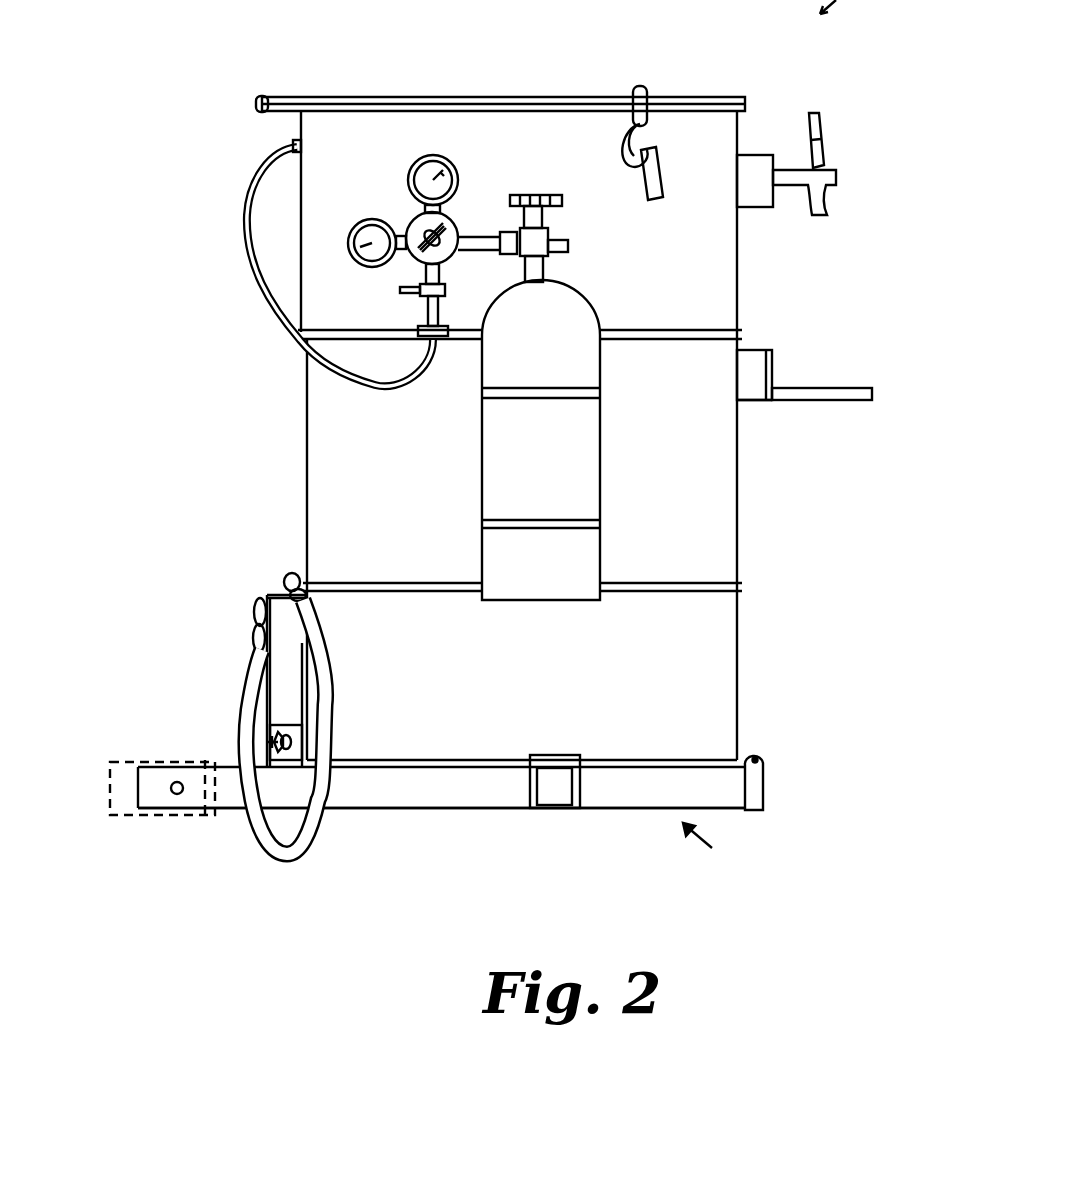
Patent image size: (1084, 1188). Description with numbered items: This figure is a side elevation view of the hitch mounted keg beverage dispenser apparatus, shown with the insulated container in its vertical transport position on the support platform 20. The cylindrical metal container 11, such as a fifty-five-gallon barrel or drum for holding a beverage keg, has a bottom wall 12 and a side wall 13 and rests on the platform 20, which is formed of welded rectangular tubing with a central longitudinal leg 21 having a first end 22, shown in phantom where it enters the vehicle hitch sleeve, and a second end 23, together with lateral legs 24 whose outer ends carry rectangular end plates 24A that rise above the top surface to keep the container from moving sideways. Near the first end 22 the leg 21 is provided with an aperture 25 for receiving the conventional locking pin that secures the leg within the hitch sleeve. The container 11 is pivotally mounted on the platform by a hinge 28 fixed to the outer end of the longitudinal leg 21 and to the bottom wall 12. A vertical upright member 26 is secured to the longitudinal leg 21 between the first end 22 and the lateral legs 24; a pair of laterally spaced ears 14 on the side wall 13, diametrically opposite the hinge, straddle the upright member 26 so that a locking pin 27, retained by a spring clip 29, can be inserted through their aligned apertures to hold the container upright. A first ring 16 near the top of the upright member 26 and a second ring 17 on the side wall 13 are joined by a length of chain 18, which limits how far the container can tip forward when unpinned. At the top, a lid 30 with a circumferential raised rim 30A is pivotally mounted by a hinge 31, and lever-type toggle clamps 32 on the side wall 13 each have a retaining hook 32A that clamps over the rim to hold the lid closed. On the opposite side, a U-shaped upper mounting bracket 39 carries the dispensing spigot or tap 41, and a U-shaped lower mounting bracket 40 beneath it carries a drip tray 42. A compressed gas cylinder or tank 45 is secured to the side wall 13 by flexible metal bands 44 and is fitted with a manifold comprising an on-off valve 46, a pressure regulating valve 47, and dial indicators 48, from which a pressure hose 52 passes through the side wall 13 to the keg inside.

The cylindrical metal container 11 is at (738, 666).
The bottom wall 12 is at (450, 770).
The side wall 13 is at (600, 691).
The first pair of laterally spaced ears 14 is at (292, 725).
The first ring 16 is at (262, 606).
The second ring 17 is at (294, 578).
The chain 18 is at (283, 855).
The support platform 20 is at (720, 852).
The central longitudinal leg 21 is at (400, 800).
The first end 22 is at (138, 785).
The second end 23 is at (733, 800).
The lateral legs 24 is at (580, 800).
The rectangular end plates 24A is at (530, 800).
The pin hole 25 is at (177, 795).
The vertical upright member 26 is at (283, 672).
The locking pin 27 is at (292, 742).
The hinge 28 is at (763, 757).
The spring clip 29 is at (276, 737).
The lid 30 is at (503, 72).
The circumferential raised rim 30A is at (423, 97).
The hinge 31 is at (262, 96).
The lever-type toggle clamps 32 is at (645, 115).
The retaining hook 32A is at (640, 86).
The upper mounting bracket 39 is at (773, 192).
The lower mounting bracket 40 is at (755, 352).
The dispensing spigot or tap 41 is at (836, 196).
The drip tray 42 is at (815, 388).
The flexible metal bands 44 is at (583, 520).
The compressed gas cylinder or tank 45 is at (563, 472).
The on-off valve 46 is at (540, 232).
The pressure regulating valve 47 is at (447, 252).
The dial indicators 48 is at (387, 228).
The pressure hose 52 is at (257, 265).